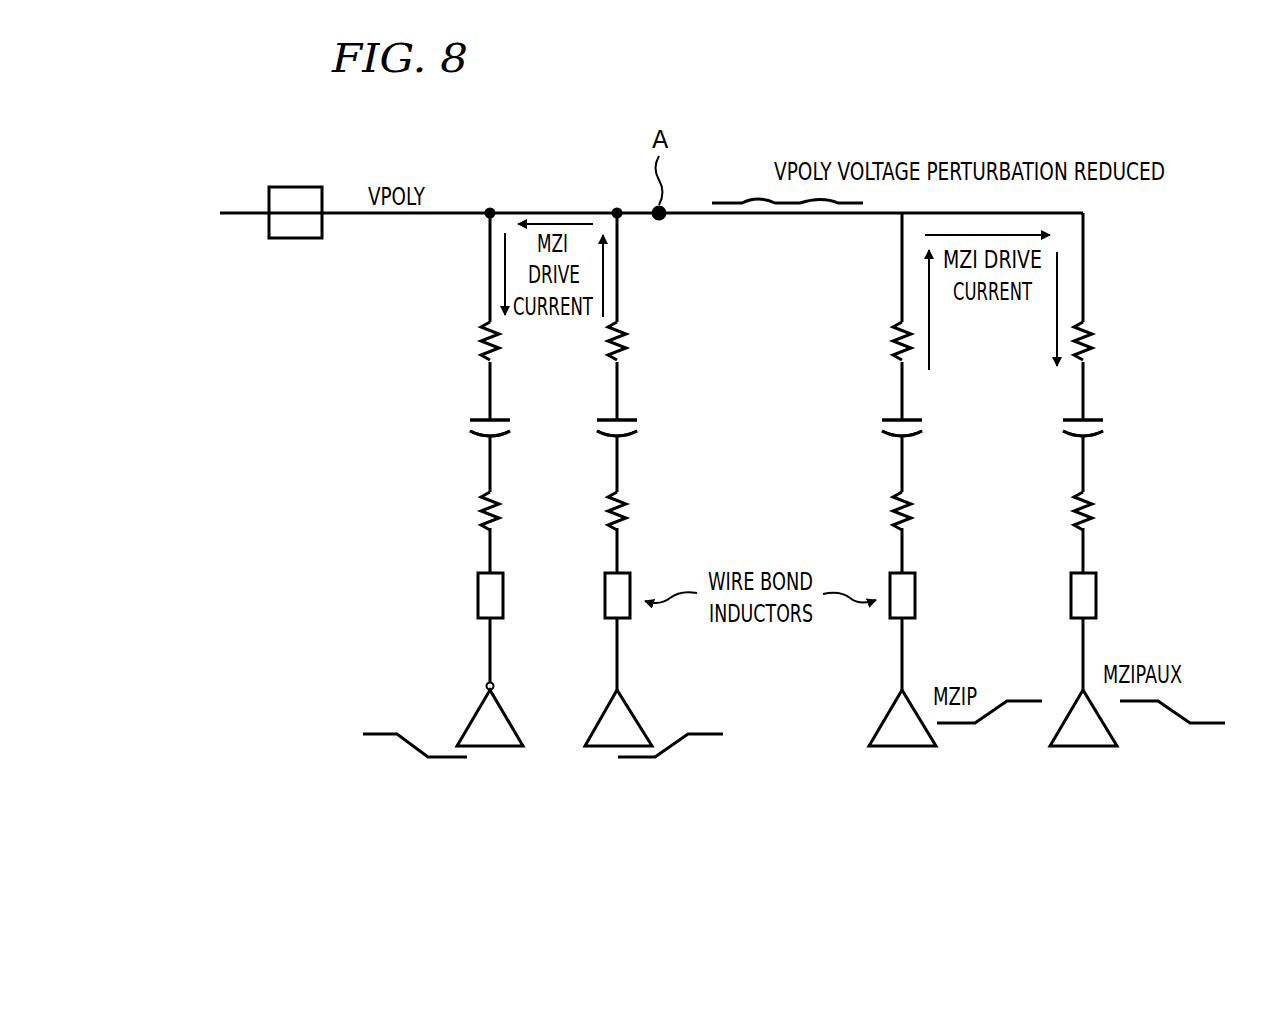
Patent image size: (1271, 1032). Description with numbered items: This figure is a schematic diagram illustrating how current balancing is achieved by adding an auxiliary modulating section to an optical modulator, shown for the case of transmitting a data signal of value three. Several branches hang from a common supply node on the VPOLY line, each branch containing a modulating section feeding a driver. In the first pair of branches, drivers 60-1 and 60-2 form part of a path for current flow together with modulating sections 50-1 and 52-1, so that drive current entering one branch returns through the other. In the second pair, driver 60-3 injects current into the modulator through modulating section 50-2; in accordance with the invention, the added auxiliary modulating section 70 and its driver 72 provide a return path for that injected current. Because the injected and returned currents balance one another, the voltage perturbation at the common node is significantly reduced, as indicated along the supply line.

The modulating section 50-1 is at (466, 430).
The modulating section 52-1 is at (638, 427).
The modulating section 50-2 is at (922, 428).
The auxiliary modulating section 70 is at (1102, 428).
The driver 60-1 is at (478, 725).
The driver 60-2 is at (627, 722).
The driver 60-3 is at (900, 722).
The driver 72 is at (1082, 734).